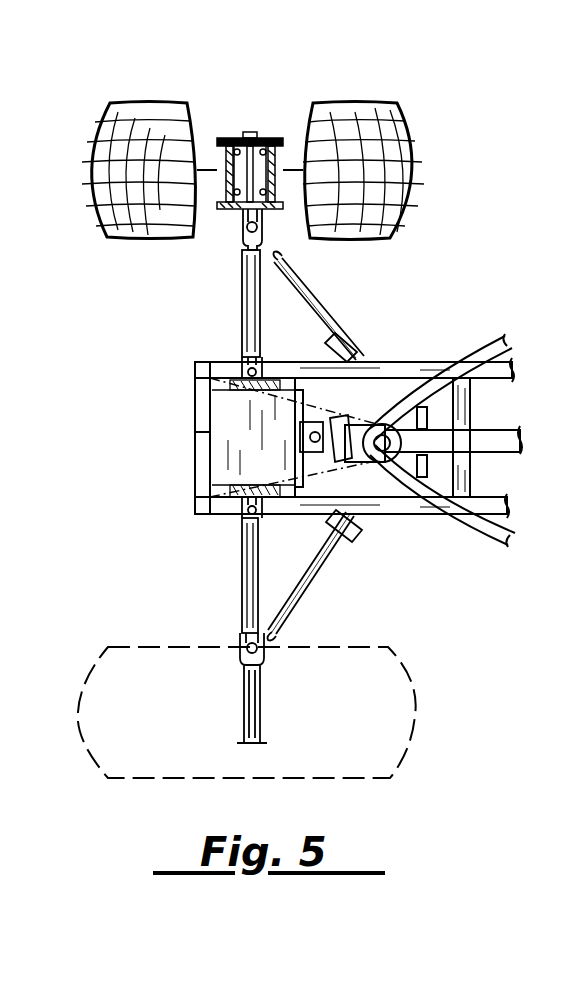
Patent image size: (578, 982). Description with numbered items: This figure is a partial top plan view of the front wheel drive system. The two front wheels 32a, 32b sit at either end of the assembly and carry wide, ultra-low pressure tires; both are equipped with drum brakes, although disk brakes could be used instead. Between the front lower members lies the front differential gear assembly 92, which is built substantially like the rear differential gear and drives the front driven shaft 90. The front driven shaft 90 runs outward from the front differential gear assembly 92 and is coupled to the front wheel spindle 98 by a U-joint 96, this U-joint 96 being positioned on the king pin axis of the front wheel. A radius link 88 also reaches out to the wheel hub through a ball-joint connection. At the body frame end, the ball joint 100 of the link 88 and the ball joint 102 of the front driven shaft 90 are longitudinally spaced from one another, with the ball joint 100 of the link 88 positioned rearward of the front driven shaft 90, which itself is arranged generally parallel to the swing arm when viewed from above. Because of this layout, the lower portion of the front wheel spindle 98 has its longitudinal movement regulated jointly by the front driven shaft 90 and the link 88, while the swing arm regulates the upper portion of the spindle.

The front wheel 32a is at (413, 738).
The front wheel 32b is at (410, 122).
The radius link 88 is at (305, 575).
The front driven shaft 90 is at (240, 578).
The front differential gear assembly 92 is at (210, 437).
The U-joint 96 is at (240, 645).
The front wheel spindle 98 is at (232, 212).
The ball joint 100 is at (362, 520).
The ball joint 102 is at (215, 505).